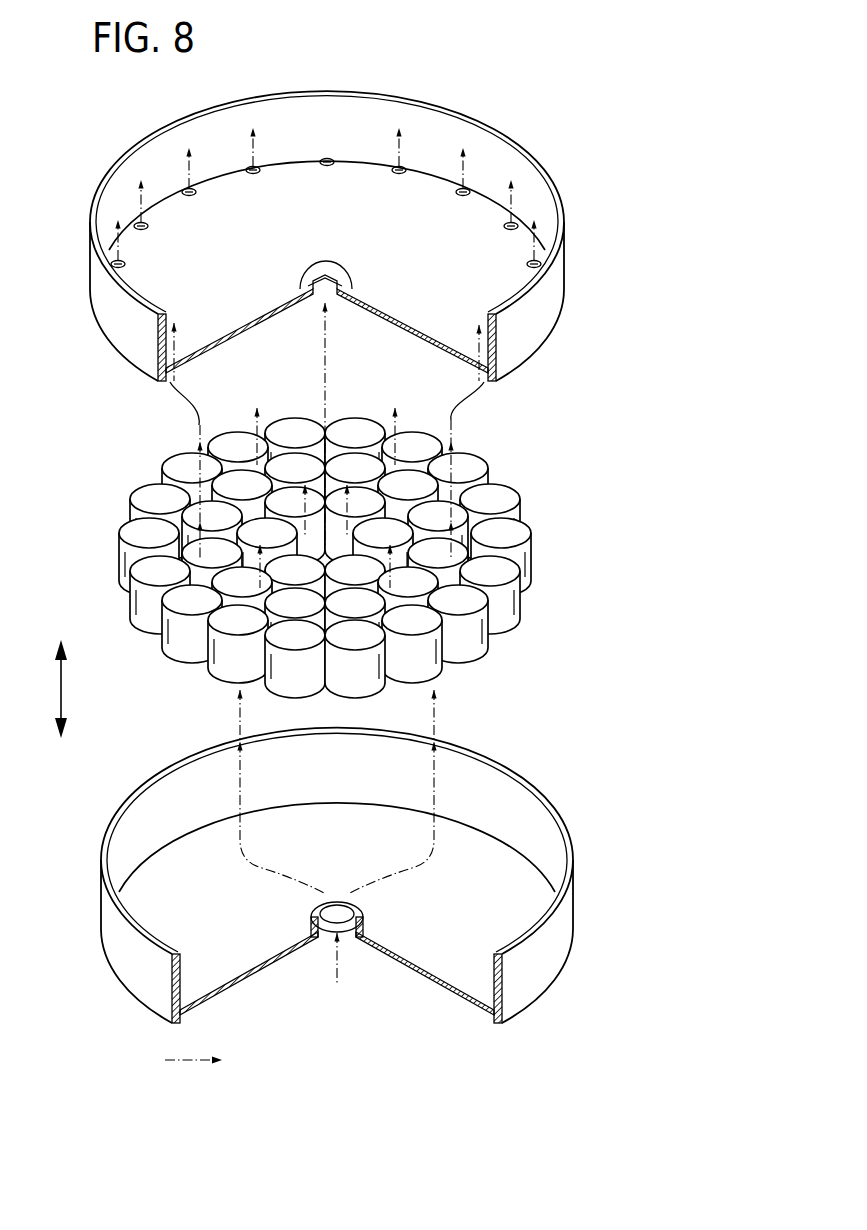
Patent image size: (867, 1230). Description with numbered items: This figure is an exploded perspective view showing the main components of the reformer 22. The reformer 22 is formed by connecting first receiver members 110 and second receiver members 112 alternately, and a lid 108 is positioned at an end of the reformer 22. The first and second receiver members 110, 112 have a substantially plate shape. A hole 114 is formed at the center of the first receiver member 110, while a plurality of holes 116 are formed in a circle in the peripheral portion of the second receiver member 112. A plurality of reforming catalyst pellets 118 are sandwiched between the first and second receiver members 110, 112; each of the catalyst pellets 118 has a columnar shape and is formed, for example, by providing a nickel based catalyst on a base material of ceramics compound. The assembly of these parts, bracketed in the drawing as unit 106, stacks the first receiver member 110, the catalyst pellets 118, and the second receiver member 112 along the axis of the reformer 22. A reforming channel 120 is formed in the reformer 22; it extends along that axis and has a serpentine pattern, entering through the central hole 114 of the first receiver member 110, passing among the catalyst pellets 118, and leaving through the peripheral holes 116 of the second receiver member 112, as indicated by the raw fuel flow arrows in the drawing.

The reformer 22 is at (624, 287).
The reforming unit 106 is at (636, 976).
The lid 108 is at (578, 165).
The first receiver member 110 is at (545, 938).
The second receiver member 112 is at (523, 330).
The hole 114 is at (348, 904).
The holes 116 is at (323, 157).
The reforming catalyst pellets 118 is at (503, 497).
The reforming channel 120 is at (197, 425).